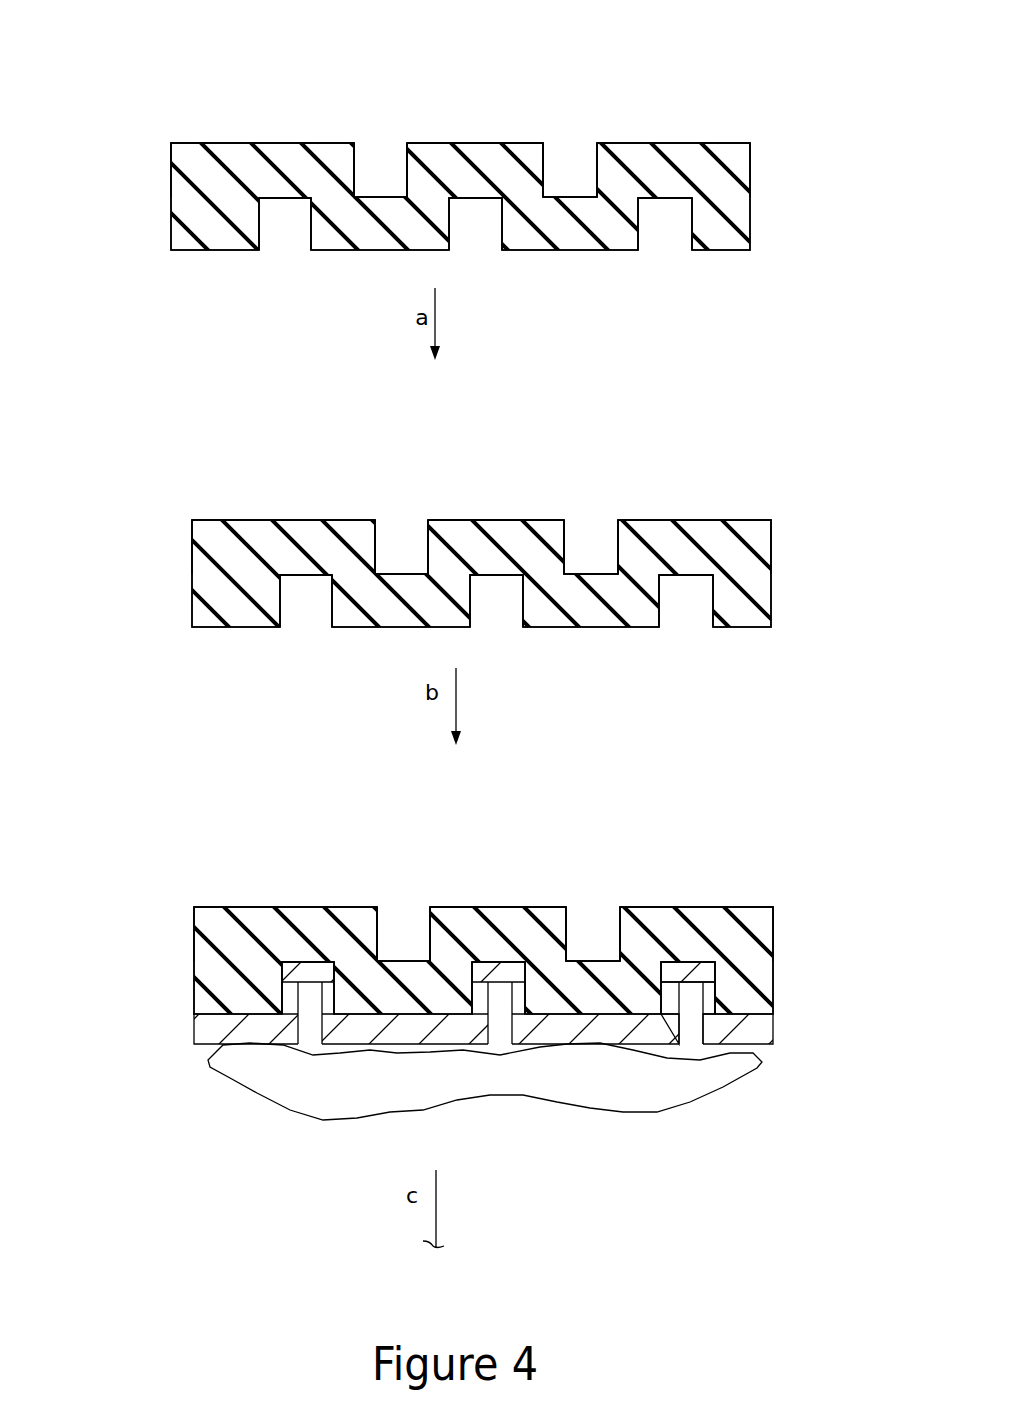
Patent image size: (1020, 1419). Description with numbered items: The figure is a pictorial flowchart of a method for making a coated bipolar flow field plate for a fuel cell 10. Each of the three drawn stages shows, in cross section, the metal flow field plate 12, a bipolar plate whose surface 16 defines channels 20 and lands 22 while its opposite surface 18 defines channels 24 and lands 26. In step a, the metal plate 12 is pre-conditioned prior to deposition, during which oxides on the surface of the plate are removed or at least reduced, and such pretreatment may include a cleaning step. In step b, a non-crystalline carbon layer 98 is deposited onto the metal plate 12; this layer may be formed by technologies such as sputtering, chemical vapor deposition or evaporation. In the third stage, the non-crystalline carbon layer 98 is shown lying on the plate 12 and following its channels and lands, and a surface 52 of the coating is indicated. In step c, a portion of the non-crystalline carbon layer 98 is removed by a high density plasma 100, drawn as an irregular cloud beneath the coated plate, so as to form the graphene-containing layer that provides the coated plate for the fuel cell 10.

The fuel cell 10 is at (472, 519).
The flow field plate 12 is at (439, 542).
The surface 16 is at (487, 513).
The surface 18 is at (423, 525).
The channels 20 is at (487, 530).
The lands 22 is at (487, 510).
The channels 24 is at (496, 495).
The lands 26 is at (486, 460).
The surface 52 is at (694, 978).
The non-crystalline carbon layer 98 is at (197, 1017).
The high density plasma 100 is at (590, 1105).